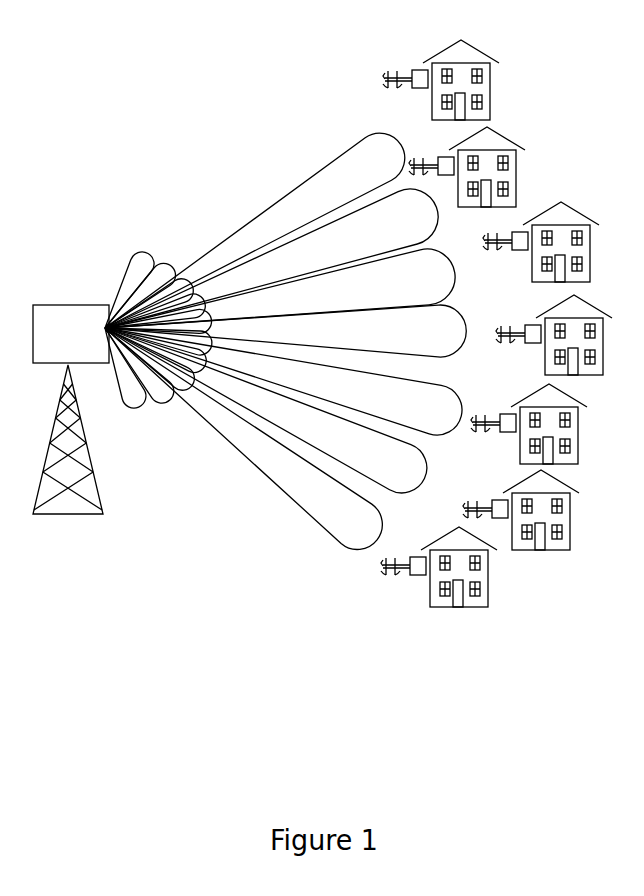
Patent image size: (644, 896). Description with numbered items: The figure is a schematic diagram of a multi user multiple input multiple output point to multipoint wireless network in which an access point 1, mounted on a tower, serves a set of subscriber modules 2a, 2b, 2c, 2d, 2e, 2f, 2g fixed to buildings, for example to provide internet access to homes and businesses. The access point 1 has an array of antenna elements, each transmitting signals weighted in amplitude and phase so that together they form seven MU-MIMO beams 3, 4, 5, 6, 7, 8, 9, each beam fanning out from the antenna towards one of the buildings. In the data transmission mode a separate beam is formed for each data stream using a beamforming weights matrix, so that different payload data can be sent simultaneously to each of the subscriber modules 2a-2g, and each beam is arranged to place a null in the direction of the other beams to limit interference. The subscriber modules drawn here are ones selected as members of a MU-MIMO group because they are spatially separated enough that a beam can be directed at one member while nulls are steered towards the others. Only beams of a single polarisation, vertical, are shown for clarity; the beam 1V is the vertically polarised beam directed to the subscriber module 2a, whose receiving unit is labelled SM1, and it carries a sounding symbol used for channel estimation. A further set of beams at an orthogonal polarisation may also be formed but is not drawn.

The access point 1 is at (63, 298).
The beam 1V is at (255, 230).
The subscriber module 2a is at (421, 67).
The subscriber module 2b is at (430, 148).
The subscriber module 2c is at (516, 265).
The subscriber module 2d is at (517, 350).
The subscriber module 2e is at (500, 438).
The subscriber module 2f is at (460, 502).
The subscriber module 2g is at (400, 583).
The subscriber module SM1 is at (407, 62).
The MU-MIMO beam 3 is at (255, 209).
The MU-MIMO beam 4 is at (405, 198).
The MU-MIMO beam 5 is at (425, 258).
The MU-MIMO beam 6 is at (428, 320).
The MU-MIMO beam 7 is at (428, 428).
The MU-MIMO beam 8 is at (408, 485).
The MU-MIMO beam 9 is at (370, 540).